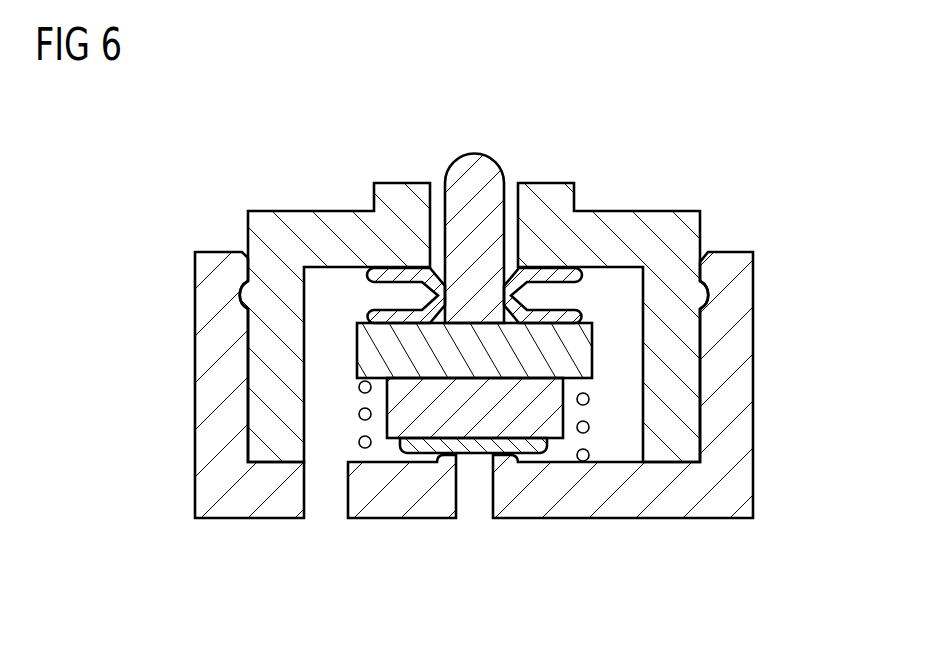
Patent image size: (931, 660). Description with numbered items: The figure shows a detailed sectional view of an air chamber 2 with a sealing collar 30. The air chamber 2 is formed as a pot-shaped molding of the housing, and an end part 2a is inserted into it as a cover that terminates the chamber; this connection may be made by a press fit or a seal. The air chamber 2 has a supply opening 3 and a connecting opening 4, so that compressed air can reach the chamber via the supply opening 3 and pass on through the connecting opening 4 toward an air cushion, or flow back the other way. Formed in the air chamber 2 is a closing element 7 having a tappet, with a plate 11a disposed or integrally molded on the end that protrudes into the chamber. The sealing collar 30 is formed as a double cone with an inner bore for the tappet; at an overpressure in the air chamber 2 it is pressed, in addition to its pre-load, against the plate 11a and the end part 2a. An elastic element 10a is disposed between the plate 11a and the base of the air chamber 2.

The air chamber 2 is at (613, 317).
The end part 2a is at (306, 226).
The supply opening 3 is at (472, 497).
The connecting opening 4 is at (324, 497).
The closing element 7 is at (468, 162).
The elastic element 10a is at (590, 427).
The plate 11a is at (557, 353).
The sealing collar 30 is at (591, 297).